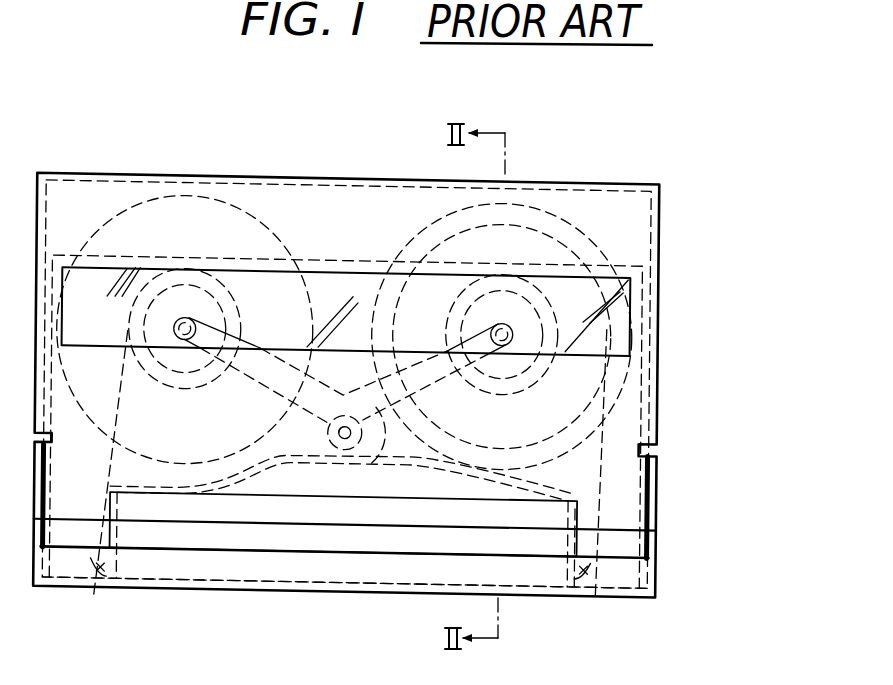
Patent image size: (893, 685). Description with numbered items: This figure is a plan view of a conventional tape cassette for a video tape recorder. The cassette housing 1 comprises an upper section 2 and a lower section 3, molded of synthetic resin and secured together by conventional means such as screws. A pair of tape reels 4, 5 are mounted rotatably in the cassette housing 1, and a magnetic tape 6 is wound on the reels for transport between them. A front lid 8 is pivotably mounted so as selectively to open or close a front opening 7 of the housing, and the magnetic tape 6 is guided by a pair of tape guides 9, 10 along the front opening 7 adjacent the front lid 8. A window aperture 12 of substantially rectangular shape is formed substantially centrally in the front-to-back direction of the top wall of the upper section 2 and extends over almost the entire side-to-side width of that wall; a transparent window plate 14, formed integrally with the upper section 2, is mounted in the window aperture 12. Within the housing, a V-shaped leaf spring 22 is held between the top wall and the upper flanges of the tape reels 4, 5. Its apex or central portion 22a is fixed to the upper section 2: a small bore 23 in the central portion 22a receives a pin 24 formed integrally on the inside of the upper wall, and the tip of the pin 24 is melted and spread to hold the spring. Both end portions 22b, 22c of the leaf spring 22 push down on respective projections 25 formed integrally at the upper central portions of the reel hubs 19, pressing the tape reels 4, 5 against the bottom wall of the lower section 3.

The cassette housing 1 is at (374, 166).
The upper section 2 is at (75, 190).
The lower section 3 is at (625, 210).
The tape reel 4 is at (217, 218).
The tape reel 5 is at (560, 220).
The magnetic tape 6 is at (302, 597).
The front opening 7 is at (411, 536).
The front lid 8 is at (467, 585).
The tape guide 9 is at (109, 480).
The tape guide 10 is at (590, 486).
The window aperture 12 is at (366, 272).
The transparent window plate 14 is at (325, 299).
The reel hub 19 is at (182, 314).
The leaf spring 22 is at (290, 402).
The central portion 22a is at (312, 470).
The end portion 22b is at (200, 342).
The end portion 22c is at (480, 352).
The small bore 23 is at (352, 452).
The pin 24 is at (378, 458).
The projection 25 is at (190, 314).